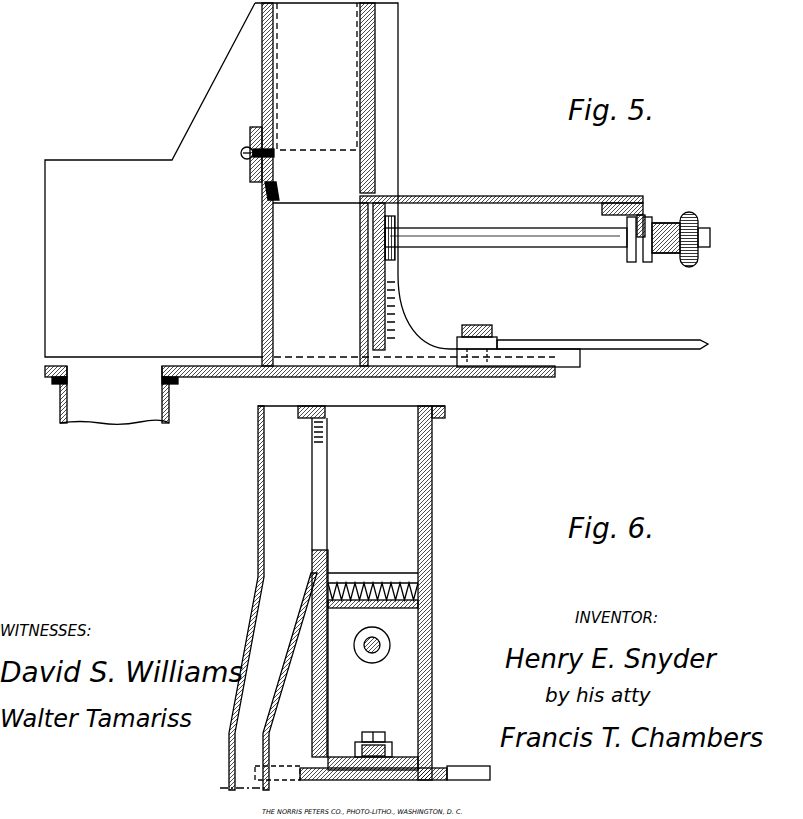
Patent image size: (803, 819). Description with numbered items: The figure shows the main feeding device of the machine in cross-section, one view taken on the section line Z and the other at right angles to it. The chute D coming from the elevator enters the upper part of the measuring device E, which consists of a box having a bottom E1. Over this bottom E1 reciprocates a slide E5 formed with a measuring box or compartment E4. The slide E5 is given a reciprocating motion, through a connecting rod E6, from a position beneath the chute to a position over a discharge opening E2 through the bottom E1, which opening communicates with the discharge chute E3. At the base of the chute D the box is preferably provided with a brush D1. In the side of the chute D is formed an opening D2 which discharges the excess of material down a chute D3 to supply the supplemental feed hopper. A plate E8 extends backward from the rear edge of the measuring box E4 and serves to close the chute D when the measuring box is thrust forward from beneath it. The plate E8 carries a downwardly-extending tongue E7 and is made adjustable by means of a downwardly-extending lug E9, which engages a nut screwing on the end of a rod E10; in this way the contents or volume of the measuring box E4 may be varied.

In FIG. 6, the chute D is at (351, 593).
In FIG. 5, the brush D1 is at (279, 189).
In FIG. 6, the brush D1 is at (372, 583).
In FIG. 5, the opening D2 is at (318, 184).
In FIG. 6, the opening D2 is at (322, 497).
In FIG. 6, the chute D3 is at (268, 598).
In FIG. 5, the measuring device E is at (300, 180).
In FIG. 6, the measuring device E is at (439, 768).
In FIG. 5, the bottom E1 is at (247, 378).
In FIG. 5, the discharge opening E2 is at (112, 375).
In FIG. 5, the discharge chute E3 is at (115, 400).
In FIG. 5, the measuring box E4 is at (316, 252).
In FIG. 6, the measuring box E4 is at (348, 653).
In FIG. 5, the slide E5 is at (437, 357).
In FIG. 6, the slide E5 is at (417, 757).
In FIG. 5, the connecting rod E6 is at (575, 343).
In FIG. 6, the connecting rod E6 is at (388, 737).
In FIG. 5, the tongue E7 is at (362, 308).
In FIG. 5, the plate E8 is at (503, 196).
In FIG. 6, the plate E8 is at (432, 611).
In FIG. 5, the lug E9 is at (645, 210).
In FIG. 5, the rod E10 is at (543, 240).
In FIG. 6, the rod E10 is at (390, 645).
In FIG. 5, the section line Z is at (379, 395).
In FIG. 6, the section line Z is at (374, 787).